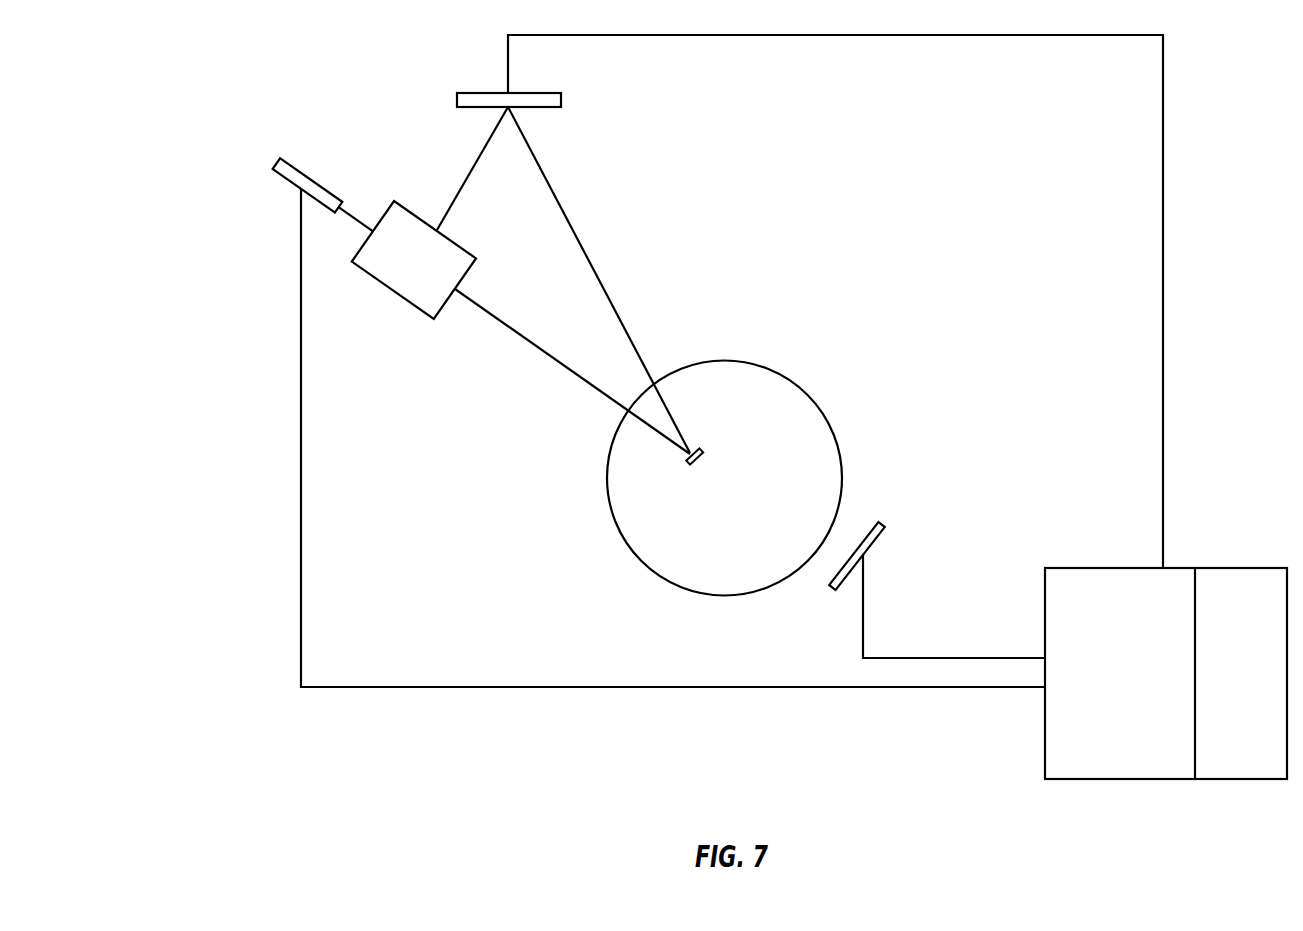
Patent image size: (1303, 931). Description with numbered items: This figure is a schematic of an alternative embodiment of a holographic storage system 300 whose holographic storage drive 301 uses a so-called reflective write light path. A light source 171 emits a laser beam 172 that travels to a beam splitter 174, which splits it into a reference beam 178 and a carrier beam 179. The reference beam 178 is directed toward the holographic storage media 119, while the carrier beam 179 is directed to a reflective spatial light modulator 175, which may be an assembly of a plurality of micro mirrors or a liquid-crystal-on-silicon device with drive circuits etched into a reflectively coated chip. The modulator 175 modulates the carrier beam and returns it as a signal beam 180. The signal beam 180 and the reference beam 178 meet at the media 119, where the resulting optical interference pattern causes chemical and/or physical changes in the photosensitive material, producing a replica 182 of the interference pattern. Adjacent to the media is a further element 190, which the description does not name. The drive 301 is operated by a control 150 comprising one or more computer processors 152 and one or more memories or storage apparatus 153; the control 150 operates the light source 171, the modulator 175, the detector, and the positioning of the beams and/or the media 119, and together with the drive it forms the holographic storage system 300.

The holographic storage system 300 is at (1192, 102).
The holographic storage drive 301 is at (266, 473).
The control 150 is at (1180, 779).
The computer processors 152 is at (1140, 687).
The memories or storage apparatus 153 is at (1262, 687).
The holographic storage media 119 is at (843, 470).
The light source 171 is at (272, 166).
The laser beam 172 is at (355, 217).
The beam splitter 174 is at (393, 292).
The reflective spatial light modulator 175 is at (482, 93).
The reference beam 178 is at (547, 357).
The carrier beam 179 is at (458, 188).
The signal beam 180 is at (588, 252).
The replica of the interference pattern 182 is at (693, 465).
The mirror 190 is at (879, 540).